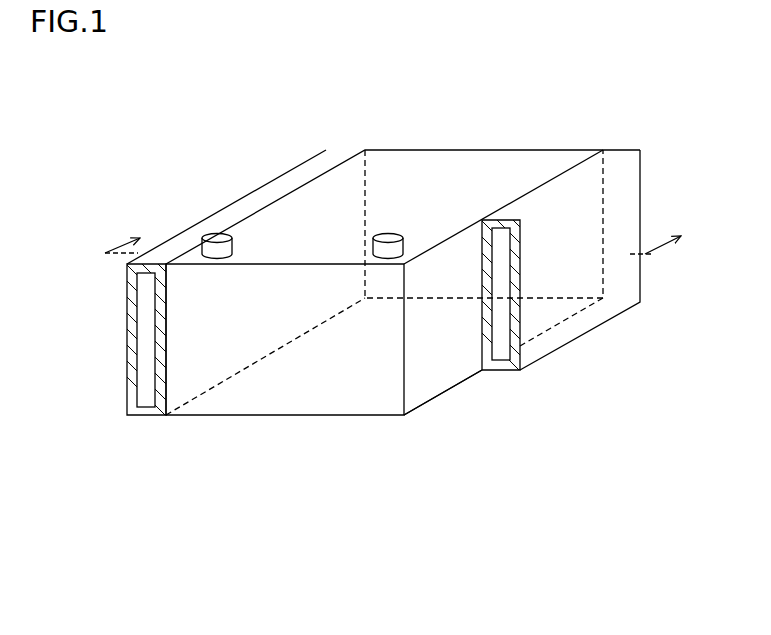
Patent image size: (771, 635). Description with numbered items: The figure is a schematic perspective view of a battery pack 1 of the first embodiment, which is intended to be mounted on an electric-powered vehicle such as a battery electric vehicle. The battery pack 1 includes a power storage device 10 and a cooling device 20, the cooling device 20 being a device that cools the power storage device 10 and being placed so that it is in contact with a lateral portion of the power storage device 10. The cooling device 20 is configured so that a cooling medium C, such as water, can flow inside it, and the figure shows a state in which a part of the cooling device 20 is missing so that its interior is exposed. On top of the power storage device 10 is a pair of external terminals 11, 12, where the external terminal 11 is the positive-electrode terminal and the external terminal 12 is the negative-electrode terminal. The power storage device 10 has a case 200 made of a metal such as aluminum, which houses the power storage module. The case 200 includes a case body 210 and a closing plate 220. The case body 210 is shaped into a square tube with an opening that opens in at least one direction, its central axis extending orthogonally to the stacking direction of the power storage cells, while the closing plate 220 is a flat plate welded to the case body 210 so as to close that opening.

The battery pack 1 is at (274, 126).
The power storage device 10 is at (498, 150).
The cooling device 20 is at (345, 150).
The external terminal 11 is at (217, 233).
The external terminal 12 is at (388, 233).
The case 200 is at (479, 478).
The case body 210 is at (442, 372).
The closing plate 220 is at (375, 383).
The cooling medium C is at (498, 303).